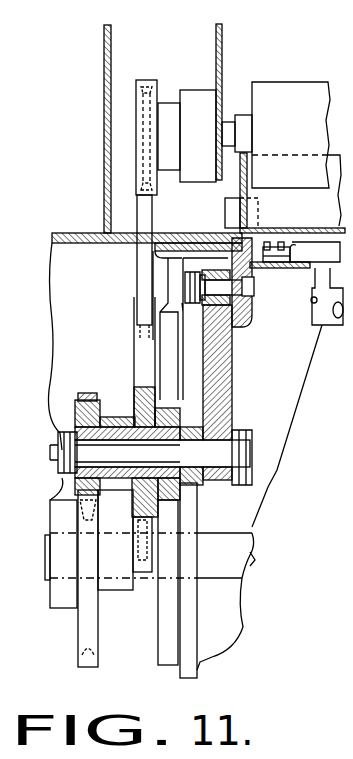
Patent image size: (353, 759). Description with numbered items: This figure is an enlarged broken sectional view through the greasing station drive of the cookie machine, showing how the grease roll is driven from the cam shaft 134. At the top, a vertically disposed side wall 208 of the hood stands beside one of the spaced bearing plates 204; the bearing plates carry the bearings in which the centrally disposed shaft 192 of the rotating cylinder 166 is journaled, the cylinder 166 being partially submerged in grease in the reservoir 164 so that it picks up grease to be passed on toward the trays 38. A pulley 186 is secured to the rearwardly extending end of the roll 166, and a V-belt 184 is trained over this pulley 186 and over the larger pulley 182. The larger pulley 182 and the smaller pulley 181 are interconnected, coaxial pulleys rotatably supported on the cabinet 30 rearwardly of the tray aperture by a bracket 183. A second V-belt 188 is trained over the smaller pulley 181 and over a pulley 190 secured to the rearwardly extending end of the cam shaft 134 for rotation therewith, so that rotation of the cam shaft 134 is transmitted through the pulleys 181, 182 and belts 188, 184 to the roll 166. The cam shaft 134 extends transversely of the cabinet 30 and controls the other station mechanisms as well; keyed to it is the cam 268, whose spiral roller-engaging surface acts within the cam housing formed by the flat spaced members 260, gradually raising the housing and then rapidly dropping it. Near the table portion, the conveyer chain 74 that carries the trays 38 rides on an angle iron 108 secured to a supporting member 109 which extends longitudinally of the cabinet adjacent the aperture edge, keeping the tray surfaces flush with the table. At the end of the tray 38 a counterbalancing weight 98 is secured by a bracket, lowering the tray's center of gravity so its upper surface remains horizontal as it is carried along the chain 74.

The cabinet 30 is at (52, 233).
The tray 38 is at (302, 246).
The chain 74 is at (273, 242).
The counterbalancing weight 98 is at (328, 326).
The angle iron 108 is at (283, 264).
The supporting member 109 is at (242, 327).
The cam shaft 134 is at (252, 546).
The grease containing reservoir 164 is at (240, 188).
The rotating cylinder 166 is at (297, 82).
The smaller pulley 181 is at (77, 405).
The larger pulley 182 is at (134, 350).
The bracket 183 is at (222, 390).
The V-belt 184 is at (137, 258).
The pulley 186 is at (136, 113).
The second V-belt 188 is at (78, 623).
The pulley 190 is at (78, 656).
The shaft 192 is at (228, 120).
The bearing plate 204 is at (222, 28).
The side wall 208 is at (104, 90).
The flat spaced member 260 is at (190, 608).
The cam 268 is at (165, 637).